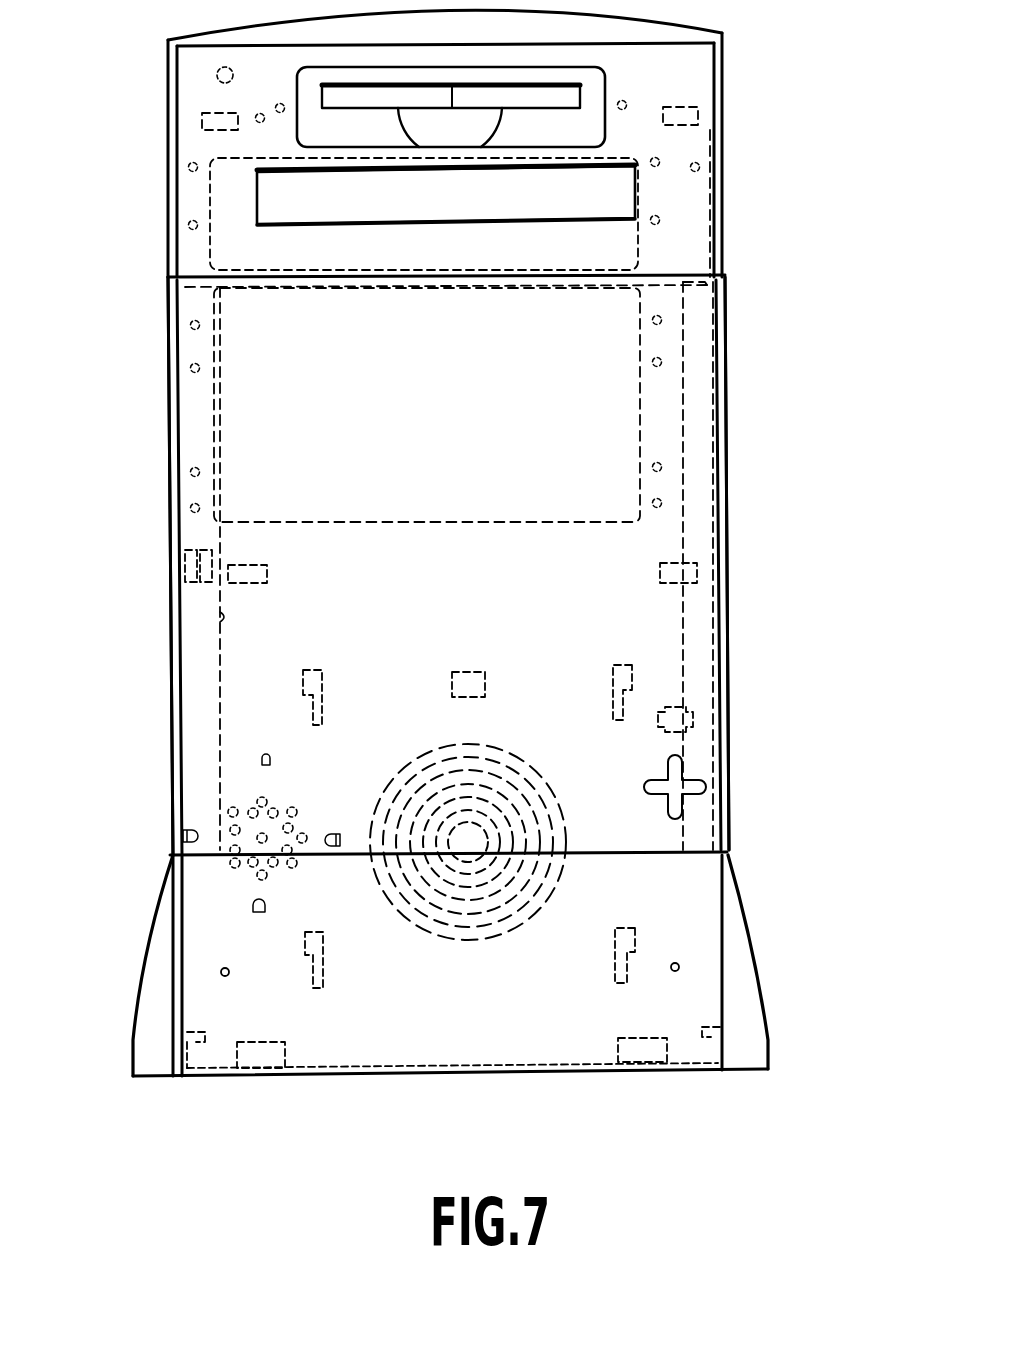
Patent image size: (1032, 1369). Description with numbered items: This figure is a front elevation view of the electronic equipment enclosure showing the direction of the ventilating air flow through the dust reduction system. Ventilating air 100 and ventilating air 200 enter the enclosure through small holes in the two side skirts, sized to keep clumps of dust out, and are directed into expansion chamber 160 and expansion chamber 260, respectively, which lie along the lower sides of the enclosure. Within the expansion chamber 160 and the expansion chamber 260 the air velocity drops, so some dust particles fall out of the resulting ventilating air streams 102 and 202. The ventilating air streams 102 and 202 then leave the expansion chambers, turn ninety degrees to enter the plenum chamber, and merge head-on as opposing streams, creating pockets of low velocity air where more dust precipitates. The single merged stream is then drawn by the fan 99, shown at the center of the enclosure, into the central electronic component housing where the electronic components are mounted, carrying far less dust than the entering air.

The fan 99 is at (497, 794).
The ventilating air 100 is at (487, 862).
The ventilating air stream 102 is at (483, 905).
The expansion chamber 160 is at (763, 1043).
The ventilating air 200 is at (450, 862).
The ventilating air stream 202 is at (455, 905).
The expansion chamber 260 is at (162, 1067).